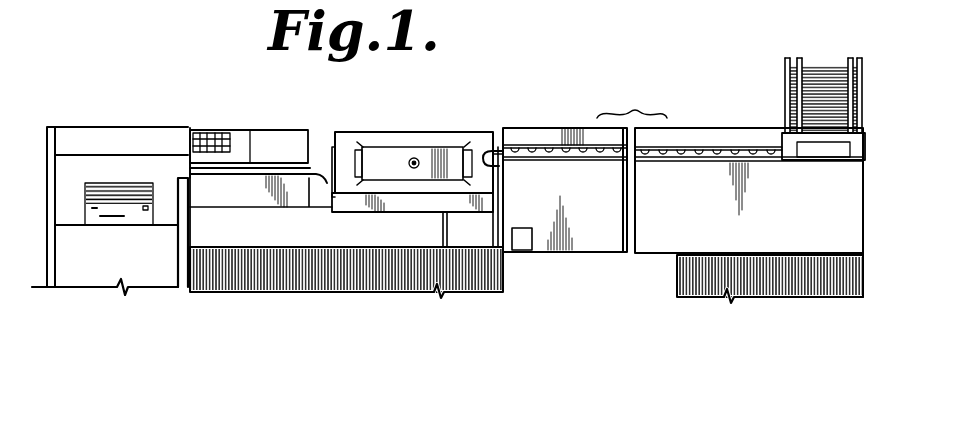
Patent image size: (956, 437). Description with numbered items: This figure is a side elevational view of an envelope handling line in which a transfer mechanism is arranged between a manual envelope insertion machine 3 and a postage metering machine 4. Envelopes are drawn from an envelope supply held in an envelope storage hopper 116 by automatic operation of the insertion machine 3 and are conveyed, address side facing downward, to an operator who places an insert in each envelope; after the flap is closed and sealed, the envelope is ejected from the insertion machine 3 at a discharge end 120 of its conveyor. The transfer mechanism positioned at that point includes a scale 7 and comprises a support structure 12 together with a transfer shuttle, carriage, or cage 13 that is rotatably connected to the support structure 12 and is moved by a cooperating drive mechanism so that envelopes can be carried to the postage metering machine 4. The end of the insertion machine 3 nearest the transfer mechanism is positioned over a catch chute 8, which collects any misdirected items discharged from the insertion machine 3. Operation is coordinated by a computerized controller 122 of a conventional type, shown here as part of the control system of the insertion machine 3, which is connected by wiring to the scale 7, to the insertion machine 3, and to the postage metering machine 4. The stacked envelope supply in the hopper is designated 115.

The envelope insertion machine 3 is at (537, 128).
The postage metering machine 4 is at (268, 130).
The scale 7 is at (362, 205).
The catch chute 8 is at (492, 230).
The support structure 12 is at (382, 130).
The transfer cage 13 is at (428, 147).
The stack of sheets 115 is at (816, 108).
The envelope storage hopper 116 is at (847, 58).
The discharge end 120 is at (503, 173).
The computerized controller 122 is at (532, 228).